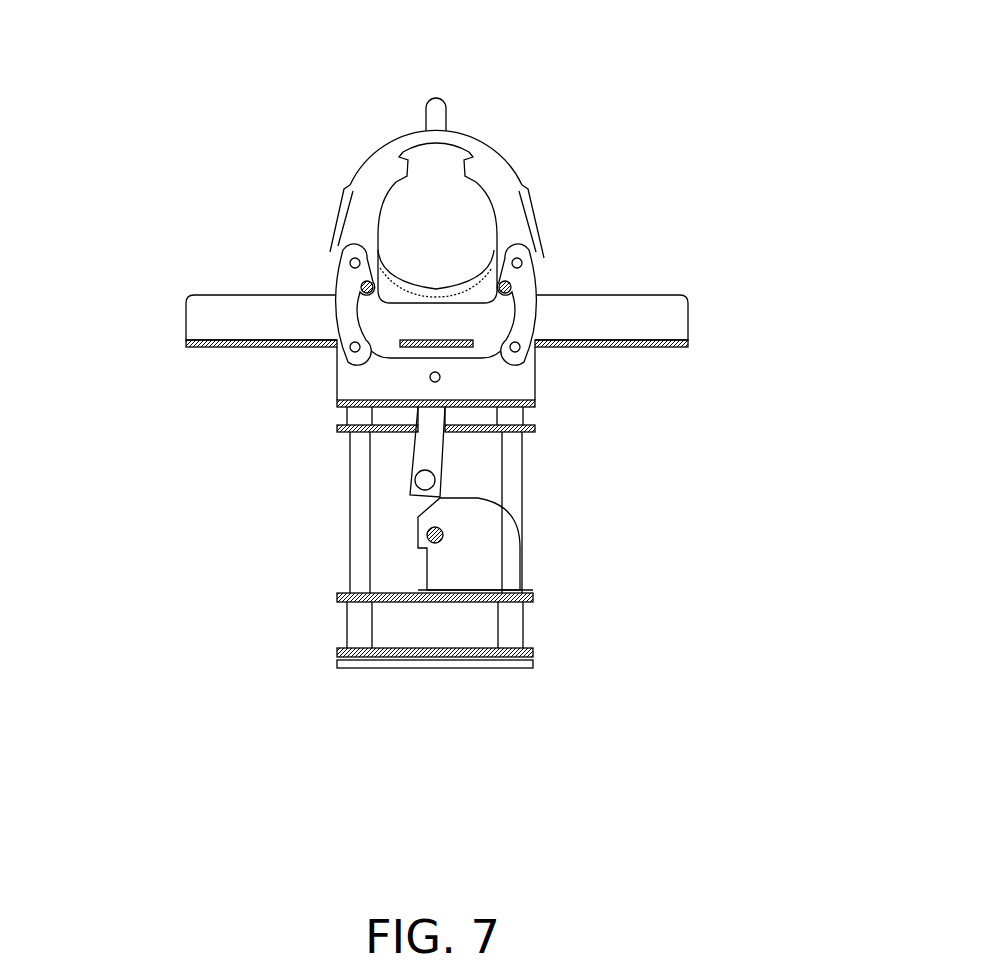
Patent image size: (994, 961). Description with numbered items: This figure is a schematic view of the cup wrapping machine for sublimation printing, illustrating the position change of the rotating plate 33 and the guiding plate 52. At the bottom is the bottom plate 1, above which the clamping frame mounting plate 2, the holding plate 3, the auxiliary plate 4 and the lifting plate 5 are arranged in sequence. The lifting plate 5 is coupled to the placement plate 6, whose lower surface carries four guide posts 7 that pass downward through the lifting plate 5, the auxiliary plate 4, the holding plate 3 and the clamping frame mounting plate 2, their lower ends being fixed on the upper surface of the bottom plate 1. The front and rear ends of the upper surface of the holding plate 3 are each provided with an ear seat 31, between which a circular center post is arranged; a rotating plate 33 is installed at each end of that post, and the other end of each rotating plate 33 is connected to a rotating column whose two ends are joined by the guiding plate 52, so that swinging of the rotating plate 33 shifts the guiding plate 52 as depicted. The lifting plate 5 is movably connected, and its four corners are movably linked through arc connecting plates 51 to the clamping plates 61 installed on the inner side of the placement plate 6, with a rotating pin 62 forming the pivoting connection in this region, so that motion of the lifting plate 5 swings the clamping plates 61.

The bottom plate 1 is at (447, 667).
The clamping frame mounting plate 2 is at (482, 652).
The holding plate 3 is at (528, 600).
The ear seat 31 is at (497, 547).
The rotating plate 33 is at (428, 503).
The auxiliary plate 4 is at (348, 425).
The lifting plate 5 is at (340, 358).
The arc connecting plate 51 is at (540, 320).
The guiding plate 52 is at (437, 425).
The placement plate 6 is at (627, 305).
The clamping plate 61 is at (485, 158).
The rotating pin 62 is at (370, 287).
The guide post 7 is at (360, 528).